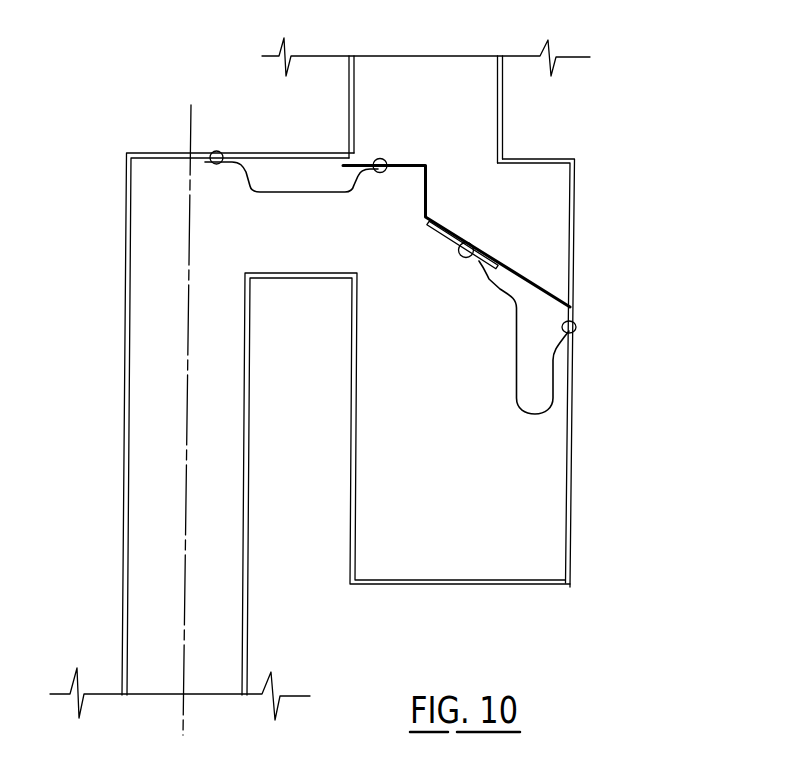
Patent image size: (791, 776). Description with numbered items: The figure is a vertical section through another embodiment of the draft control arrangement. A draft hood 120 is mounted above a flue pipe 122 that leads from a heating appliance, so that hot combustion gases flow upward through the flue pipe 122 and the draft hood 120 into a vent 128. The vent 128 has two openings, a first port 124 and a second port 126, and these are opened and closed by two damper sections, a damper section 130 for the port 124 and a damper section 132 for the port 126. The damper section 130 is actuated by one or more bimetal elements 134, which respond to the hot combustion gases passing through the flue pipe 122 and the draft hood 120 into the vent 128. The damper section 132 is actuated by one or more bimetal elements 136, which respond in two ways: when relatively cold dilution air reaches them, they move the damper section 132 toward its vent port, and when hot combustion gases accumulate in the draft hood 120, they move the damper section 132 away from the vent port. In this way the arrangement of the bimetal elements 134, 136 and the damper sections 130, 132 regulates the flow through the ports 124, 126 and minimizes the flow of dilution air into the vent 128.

The draft hood 120 is at (527, 165).
The flue pipe 122 is at (244, 532).
The port 124 is at (417, 130).
The port 126 is at (515, 226).
The vent 128 is at (497, 120).
The damper section 130 is at (367, 159).
The damper section 132 is at (446, 238).
The bimetal element 134 is at (323, 196).
The bimetal element 136 is at (516, 350).